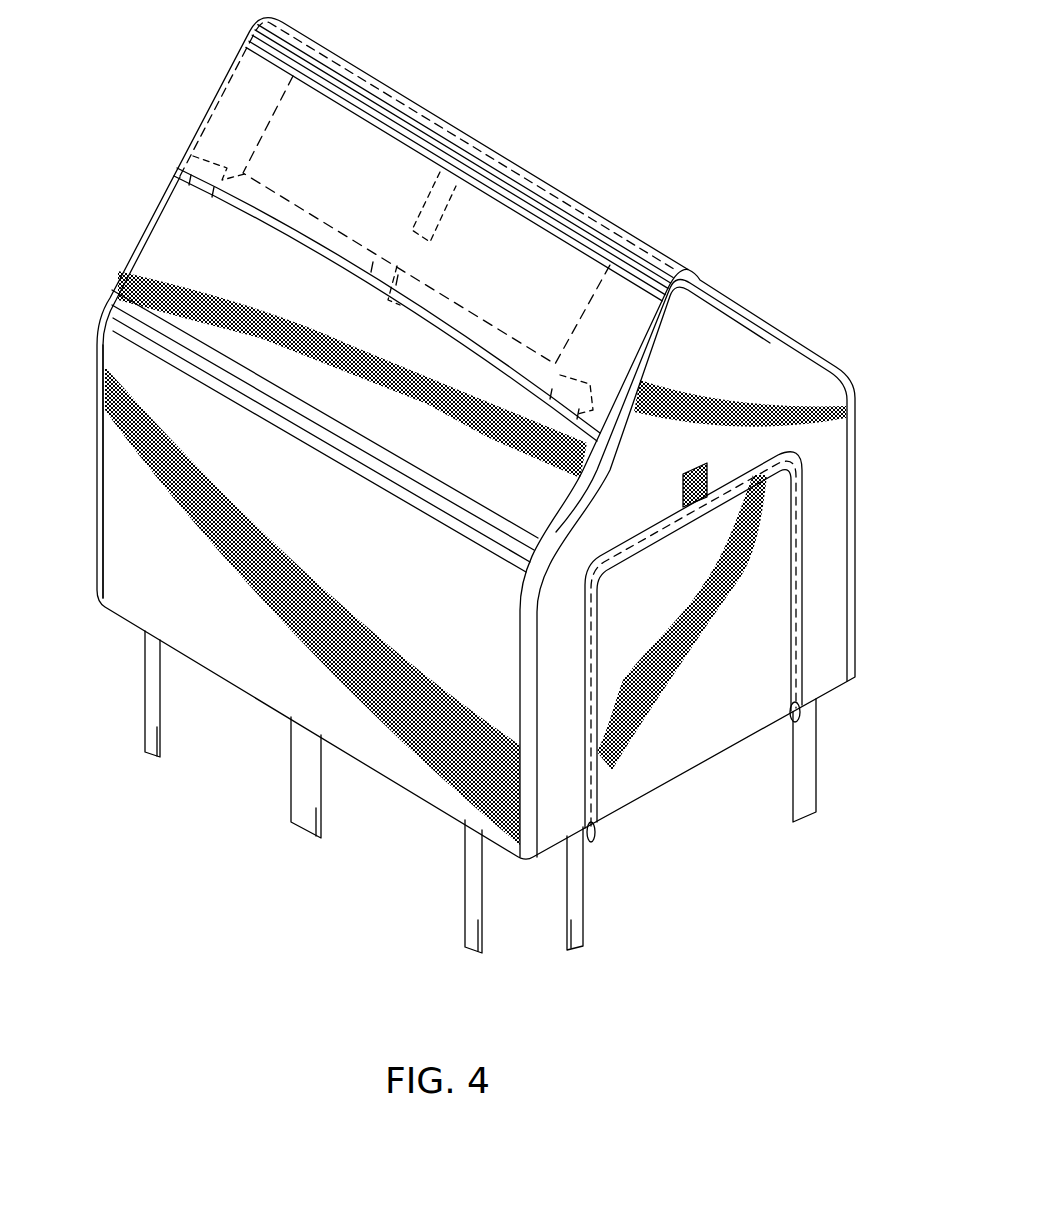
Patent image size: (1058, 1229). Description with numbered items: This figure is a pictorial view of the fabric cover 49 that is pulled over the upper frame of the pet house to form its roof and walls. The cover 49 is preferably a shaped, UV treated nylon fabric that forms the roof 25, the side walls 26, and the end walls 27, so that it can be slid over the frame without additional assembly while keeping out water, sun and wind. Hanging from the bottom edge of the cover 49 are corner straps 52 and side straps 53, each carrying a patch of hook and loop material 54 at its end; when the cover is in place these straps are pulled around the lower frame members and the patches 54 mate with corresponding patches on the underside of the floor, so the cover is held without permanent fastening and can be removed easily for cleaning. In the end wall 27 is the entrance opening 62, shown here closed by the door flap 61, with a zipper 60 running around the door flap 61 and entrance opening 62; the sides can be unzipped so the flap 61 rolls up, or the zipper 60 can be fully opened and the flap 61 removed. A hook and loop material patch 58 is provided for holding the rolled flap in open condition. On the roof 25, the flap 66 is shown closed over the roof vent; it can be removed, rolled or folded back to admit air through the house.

The roof 25 is at (178, 221).
The side walls 26 is at (124, 494).
The end walls 27 is at (826, 477).
The cover 49 is at (104, 238).
The corner straps 52 is at (147, 712).
The side straps 53 is at (300, 827).
The patches of hook and loop material 54 is at (161, 740).
The hook and loop material patch 58 is at (700, 466).
The zipper 60 is at (791, 670).
The door flap 61 is at (650, 766).
The entrance opening 62 is at (802, 623).
The flap 66 is at (545, 247).